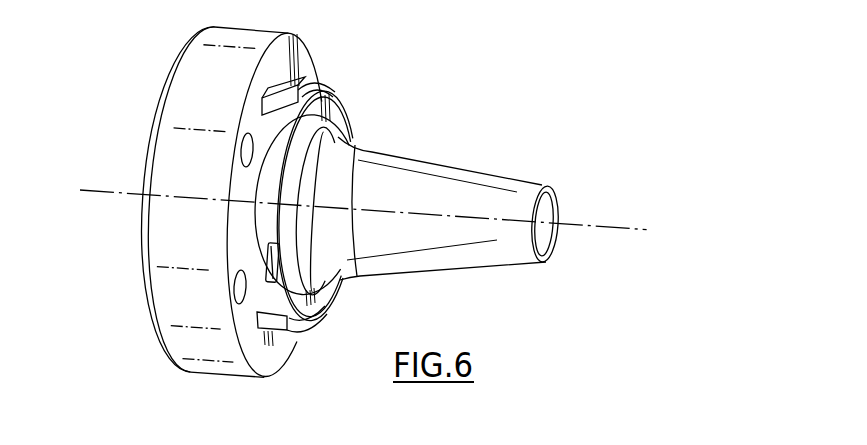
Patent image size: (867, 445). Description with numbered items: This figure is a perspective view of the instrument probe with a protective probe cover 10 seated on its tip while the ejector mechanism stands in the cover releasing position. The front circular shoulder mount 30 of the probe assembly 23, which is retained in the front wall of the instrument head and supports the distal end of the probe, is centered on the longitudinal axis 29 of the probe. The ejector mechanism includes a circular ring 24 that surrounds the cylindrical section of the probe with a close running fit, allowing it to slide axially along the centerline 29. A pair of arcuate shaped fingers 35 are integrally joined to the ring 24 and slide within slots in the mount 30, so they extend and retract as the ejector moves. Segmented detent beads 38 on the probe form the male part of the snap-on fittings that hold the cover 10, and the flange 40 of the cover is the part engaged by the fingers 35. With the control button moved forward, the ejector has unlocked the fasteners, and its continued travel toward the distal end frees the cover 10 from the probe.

The tubular duct / pipe 10 is at (445, 151).
The coupling flange assembly 23 is at (142, 112).
The flange rim lip 24 is at (143, 252).
The central axis 29 is at (624, 228).
The mounting flange 30 is at (198, 352).
The retaining clips 35 is at (306, 87).
The hub body 38 is at (330, 289).
The collar ring 40 is at (337, 122).